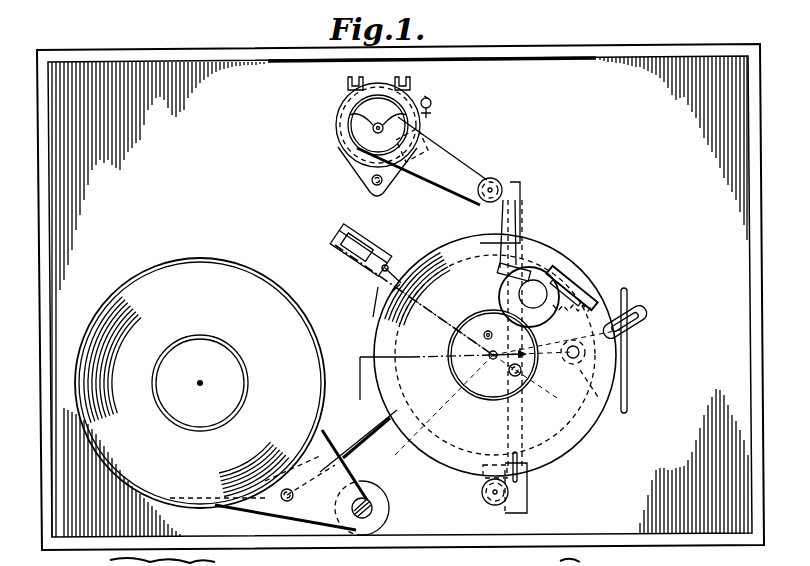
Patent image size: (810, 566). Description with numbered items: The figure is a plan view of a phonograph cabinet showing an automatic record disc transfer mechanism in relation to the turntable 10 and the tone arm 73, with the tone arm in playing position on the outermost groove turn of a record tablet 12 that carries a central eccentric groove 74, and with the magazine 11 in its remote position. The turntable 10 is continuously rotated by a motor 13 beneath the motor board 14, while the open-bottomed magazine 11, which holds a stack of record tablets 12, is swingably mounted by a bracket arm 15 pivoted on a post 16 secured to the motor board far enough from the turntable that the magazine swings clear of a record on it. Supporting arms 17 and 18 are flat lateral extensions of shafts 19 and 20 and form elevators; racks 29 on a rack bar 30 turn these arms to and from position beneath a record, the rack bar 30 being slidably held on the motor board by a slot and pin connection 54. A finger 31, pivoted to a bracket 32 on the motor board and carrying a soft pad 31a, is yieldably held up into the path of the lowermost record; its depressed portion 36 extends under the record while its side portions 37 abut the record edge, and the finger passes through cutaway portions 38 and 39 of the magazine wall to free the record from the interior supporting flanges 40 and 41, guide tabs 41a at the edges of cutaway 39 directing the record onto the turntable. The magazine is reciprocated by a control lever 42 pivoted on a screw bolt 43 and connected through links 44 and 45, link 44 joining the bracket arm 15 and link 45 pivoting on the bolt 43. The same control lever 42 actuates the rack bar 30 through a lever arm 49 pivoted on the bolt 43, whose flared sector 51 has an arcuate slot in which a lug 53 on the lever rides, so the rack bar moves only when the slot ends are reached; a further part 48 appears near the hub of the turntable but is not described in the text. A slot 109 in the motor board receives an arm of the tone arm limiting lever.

The turntable 10 is at (450, 478).
The magazine 11 is at (184, 262).
The record tablet 12 is at (256, 285).
The motor 13 is at (452, 345).
The motor board 14 is at (341, 136).
The bracket arm 15 is at (52, 535).
The post 16 is at (382, 508).
The supporting arm 17 is at (486, 228).
The supporting arm 18 is at (489, 122).
The shaft 19 is at (497, 181).
The shaft 20 is at (496, 506).
The rack 29 is at (512, 197).
The rack bar 30 is at (512, 426).
The finger 31 is at (372, 278).
The pad 31a is at (387, 265).
The bracket 32 is at (345, 262).
The depressed portion 36 is at (410, 270).
The side portions 37 is at (398, 280).
The cutaway portion 38 is at (176, 492).
The cutaway portion 39 is at (259, 300).
The supporting flange 40 is at (139, 282).
The supporting flange 41 is at (193, 498).
The guide tab 41a is at (143, 272).
The control lever 42 is at (636, 312).
The screw bolt 43 is at (573, 365).
The link 44 is at (376, 432).
The link 45 is at (487, 330).
The hub 48 is at (493, 355).
The lever arm 49 is at (522, 375).
The sector 51 is at (590, 390).
The lug 53 is at (607, 330).
The slot and pin connection 54 is at (540, 470).
The tone arm 73 is at (449, 166).
The eccentric groove 74 is at (168, 405).
The slot 109 is at (433, 137).